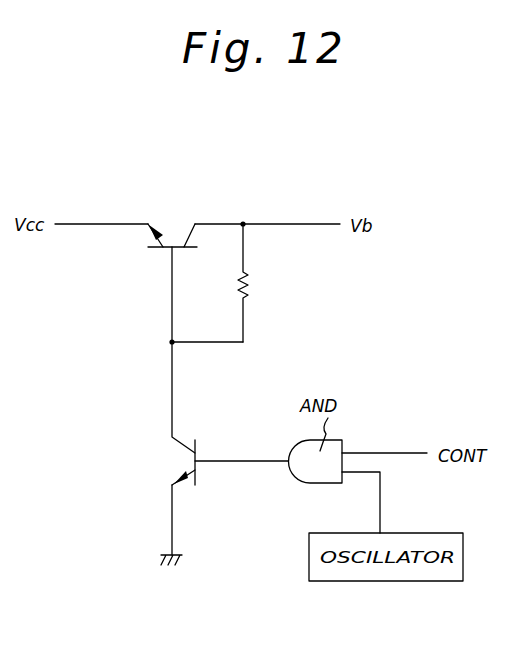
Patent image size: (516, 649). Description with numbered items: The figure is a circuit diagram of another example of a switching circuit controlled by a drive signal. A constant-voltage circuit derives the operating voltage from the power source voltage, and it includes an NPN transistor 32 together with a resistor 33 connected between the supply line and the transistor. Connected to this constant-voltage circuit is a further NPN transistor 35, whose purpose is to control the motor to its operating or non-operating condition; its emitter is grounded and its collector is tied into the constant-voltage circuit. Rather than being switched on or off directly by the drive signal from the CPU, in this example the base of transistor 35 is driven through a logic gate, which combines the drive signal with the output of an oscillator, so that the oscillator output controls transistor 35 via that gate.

The NPN transistor 32 is at (172, 232).
The resistor 33 is at (252, 282).
The NPN transistor 35 is at (178, 461).